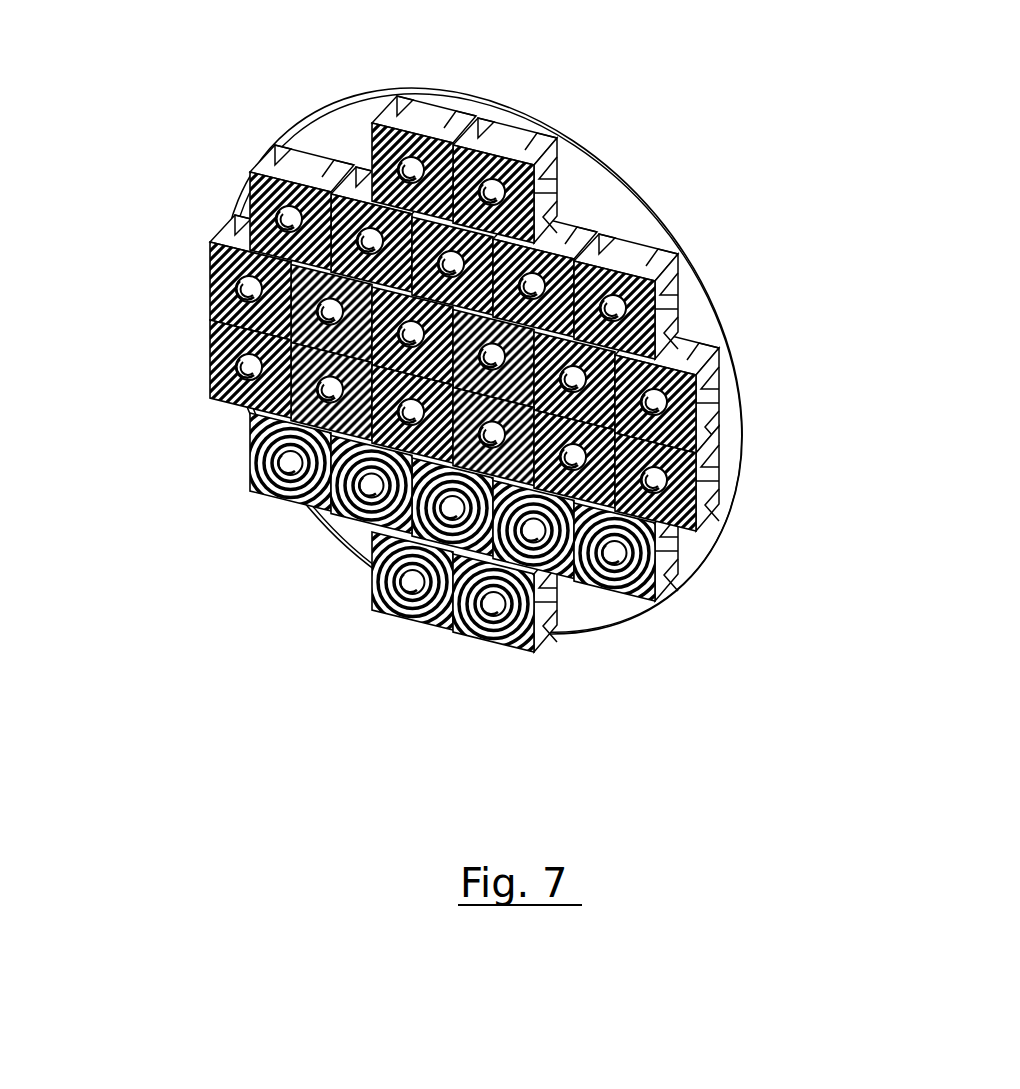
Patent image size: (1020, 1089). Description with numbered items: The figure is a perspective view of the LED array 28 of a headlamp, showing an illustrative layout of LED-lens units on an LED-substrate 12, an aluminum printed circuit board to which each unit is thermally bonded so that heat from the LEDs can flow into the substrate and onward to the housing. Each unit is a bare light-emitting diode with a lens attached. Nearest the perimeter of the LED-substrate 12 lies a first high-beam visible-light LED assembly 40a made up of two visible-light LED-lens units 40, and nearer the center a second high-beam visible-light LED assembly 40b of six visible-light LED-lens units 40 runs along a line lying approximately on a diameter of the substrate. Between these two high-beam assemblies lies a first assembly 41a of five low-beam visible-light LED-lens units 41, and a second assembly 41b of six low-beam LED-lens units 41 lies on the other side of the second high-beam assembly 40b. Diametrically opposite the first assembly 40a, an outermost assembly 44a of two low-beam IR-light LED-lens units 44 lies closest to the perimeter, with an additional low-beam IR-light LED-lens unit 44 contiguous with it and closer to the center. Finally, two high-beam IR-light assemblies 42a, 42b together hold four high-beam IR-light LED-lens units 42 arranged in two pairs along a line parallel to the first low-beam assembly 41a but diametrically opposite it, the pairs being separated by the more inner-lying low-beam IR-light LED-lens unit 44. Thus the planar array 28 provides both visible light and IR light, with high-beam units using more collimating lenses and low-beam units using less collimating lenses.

The LED-substrate 12 is at (290, 127).
The planar array 28 is at (280, 705).
The high-beam visible-light LED-lens unit 40 is at (372, 124).
The first high-beam visible-light LED assembly 40a is at (537, 193).
The second high-beam visible-light LED assembly 40b is at (698, 405).
The low-beam visible-light LED-lens unit 41 is at (250, 203).
The first low-beam visible-light assembly 41a is at (658, 310).
The second low-beam visible-light assembly 41b is at (698, 490).
The high-beam IR-light LED-lens unit 42 is at (353, 519).
The high-beam IR-light assembly 42a is at (247, 468).
The high-beam IR-light assembly 42b is at (658, 558).
The low-beam IR-light LED-lens unit 44 is at (372, 587).
The outermost-lying low-beam IR-light LED assembly 44a is at (538, 650).